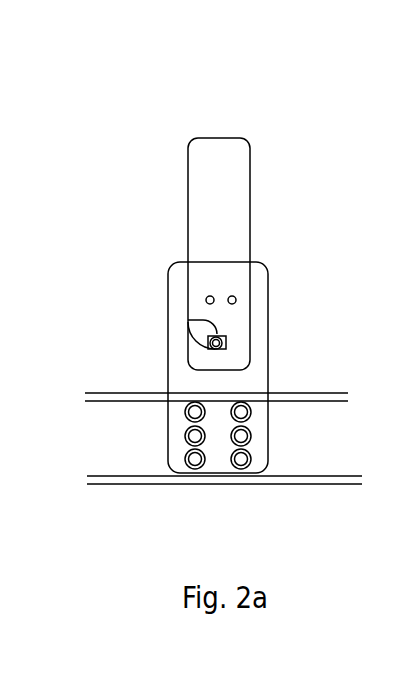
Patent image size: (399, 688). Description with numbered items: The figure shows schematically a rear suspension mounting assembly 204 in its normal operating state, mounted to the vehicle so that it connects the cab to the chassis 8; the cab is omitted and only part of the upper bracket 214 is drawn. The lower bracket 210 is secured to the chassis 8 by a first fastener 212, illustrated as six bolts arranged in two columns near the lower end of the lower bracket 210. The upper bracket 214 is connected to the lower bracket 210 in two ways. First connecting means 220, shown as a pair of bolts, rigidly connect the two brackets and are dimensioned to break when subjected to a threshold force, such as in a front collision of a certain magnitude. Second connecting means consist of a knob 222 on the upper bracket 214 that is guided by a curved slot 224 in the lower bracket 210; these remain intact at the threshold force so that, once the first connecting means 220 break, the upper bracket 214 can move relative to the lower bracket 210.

The rear suspension mounting assembly 204 is at (282, 144).
The upper bracket 214 is at (207, 170).
The first connecting means 220 is at (207, 296).
The curved slot 224 is at (197, 330).
The knob 222 is at (219, 343).
The lower bracket 210 is at (178, 386).
The chassis 8 is at (107, 437).
The first fastener 212 is at (243, 436).